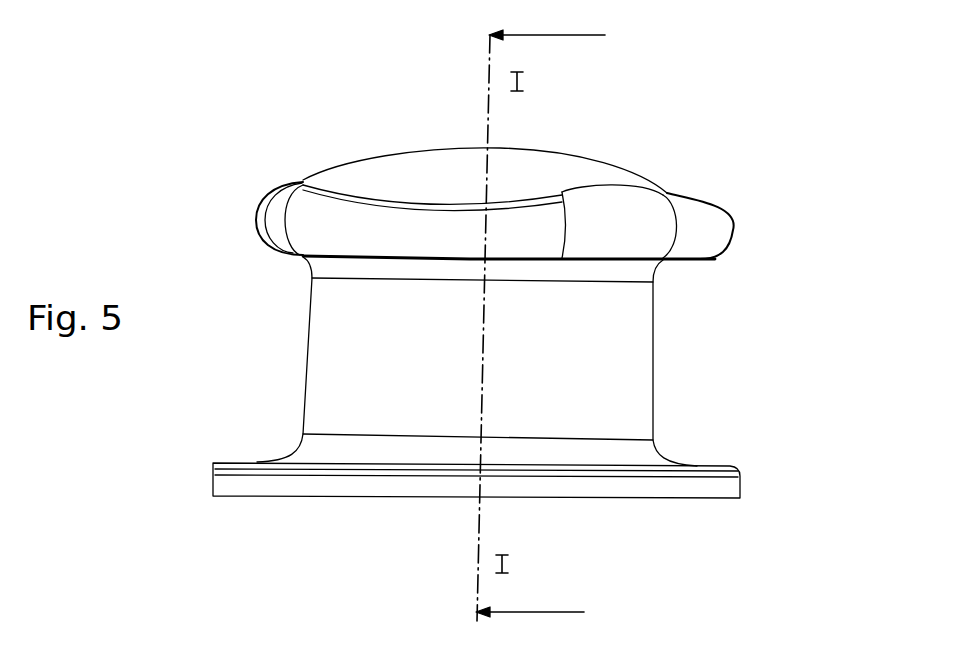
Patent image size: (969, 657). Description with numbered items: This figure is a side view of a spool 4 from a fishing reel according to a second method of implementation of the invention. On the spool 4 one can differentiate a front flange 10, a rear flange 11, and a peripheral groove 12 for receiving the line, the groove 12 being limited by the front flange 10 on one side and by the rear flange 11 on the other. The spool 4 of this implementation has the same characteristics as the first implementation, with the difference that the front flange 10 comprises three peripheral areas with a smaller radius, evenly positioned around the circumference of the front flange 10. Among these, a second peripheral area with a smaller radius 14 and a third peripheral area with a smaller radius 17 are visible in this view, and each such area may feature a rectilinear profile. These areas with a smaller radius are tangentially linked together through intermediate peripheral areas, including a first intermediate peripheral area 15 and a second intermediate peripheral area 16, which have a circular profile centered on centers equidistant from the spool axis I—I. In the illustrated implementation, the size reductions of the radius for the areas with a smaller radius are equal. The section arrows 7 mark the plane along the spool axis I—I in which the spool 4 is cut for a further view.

The spool 4 is at (235, 254).
The section line I-I 7 is at (552, 312).
The front flange 10 is at (592, 172).
The rear flange 11 is at (727, 490).
The peripheral groove 12 is at (612, 355).
The second peripheral area with a smaller radius 14 is at (628, 223).
The first intermediate peripheral area 15 is at (717, 243).
The second intermediate peripheral area 16 is at (432, 232).
The third peripheral area with a smaller radius 17 is at (282, 205).